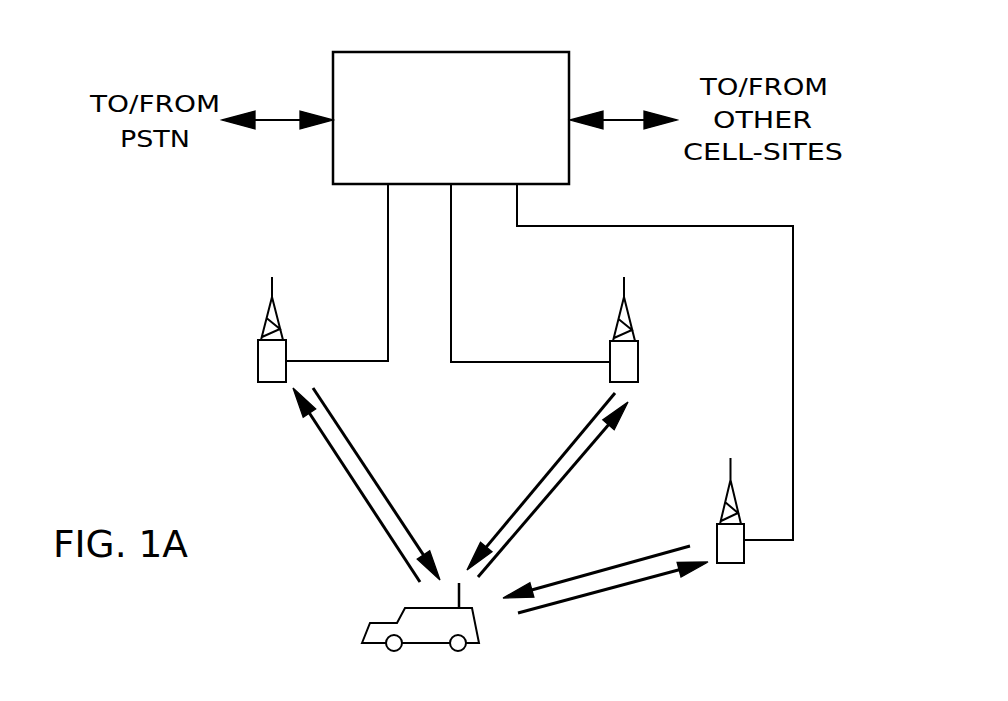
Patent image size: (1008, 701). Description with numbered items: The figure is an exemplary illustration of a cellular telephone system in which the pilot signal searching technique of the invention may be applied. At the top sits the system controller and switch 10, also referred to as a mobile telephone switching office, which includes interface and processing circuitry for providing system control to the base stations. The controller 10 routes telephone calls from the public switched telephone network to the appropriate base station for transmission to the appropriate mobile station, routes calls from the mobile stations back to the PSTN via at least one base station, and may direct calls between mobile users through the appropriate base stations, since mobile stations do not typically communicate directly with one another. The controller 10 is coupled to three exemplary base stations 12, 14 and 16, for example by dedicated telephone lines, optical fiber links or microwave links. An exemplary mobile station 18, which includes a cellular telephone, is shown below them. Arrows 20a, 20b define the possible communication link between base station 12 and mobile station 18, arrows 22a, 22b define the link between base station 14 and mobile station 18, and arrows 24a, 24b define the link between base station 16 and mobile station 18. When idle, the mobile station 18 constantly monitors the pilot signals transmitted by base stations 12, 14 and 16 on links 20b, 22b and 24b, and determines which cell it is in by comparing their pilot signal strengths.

The system controller and switch 10 is at (445, 52).
The base station 12 is at (258, 357).
The base station 14 is at (638, 355).
The base station 16 is at (744, 553).
The mobile station 18 is at (367, 630).
The arrow 20a is at (335, 460).
The arrow 20b is at (352, 442).
The arrow 22a is at (577, 460).
The arrow 22b is at (560, 458).
The arrow 24a is at (647, 577).
The arrow 24b is at (597, 570).